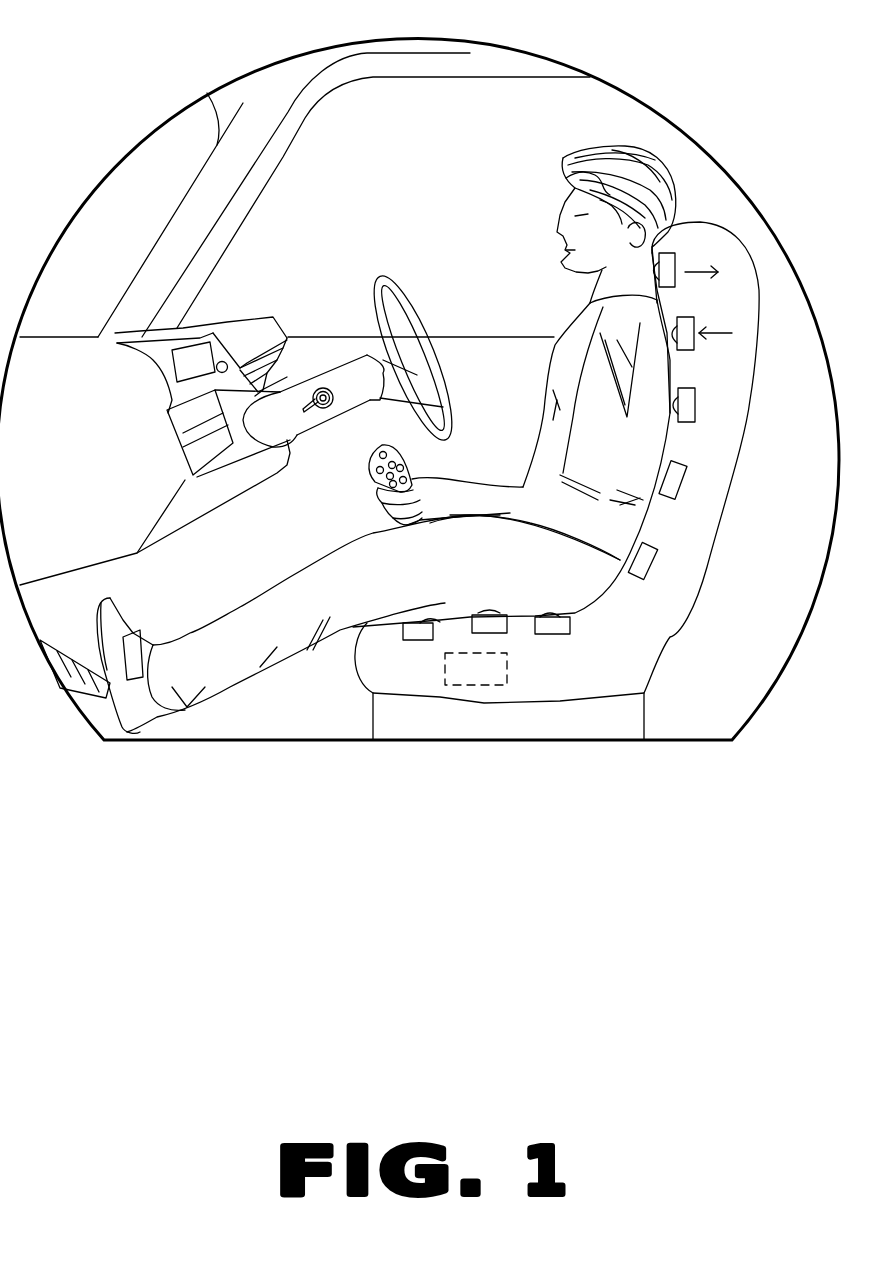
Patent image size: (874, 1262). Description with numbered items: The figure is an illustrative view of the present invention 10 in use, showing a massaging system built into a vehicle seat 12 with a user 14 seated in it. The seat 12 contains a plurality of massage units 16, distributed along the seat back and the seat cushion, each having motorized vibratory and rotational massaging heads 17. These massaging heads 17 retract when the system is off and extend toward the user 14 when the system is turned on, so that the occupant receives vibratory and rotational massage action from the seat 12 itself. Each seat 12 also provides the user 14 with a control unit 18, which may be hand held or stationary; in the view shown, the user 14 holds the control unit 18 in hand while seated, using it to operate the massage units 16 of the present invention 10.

The present invention 10 is at (732, 118).
The vehicle seat 12 is at (689, 595).
The user 14 is at (592, 153).
The massage units 16 is at (697, 410).
The massaging heads 17 is at (663, 498).
The control unit 18 is at (370, 461).